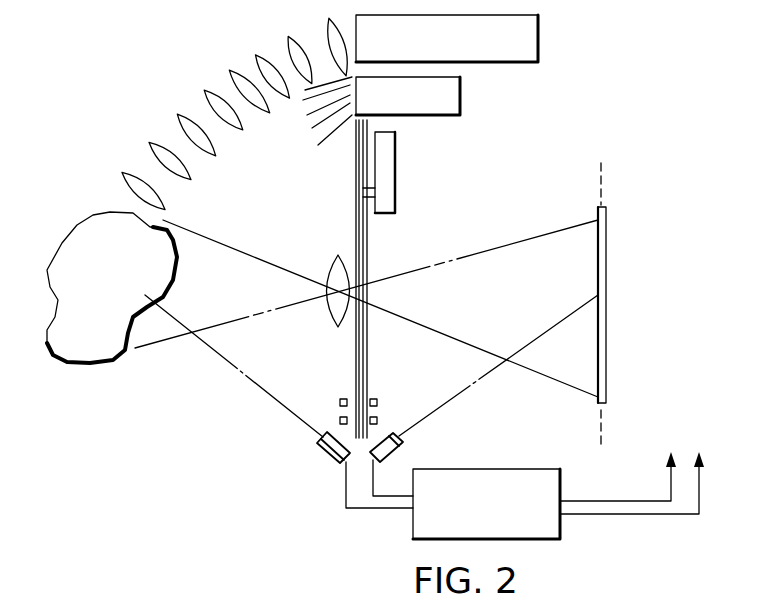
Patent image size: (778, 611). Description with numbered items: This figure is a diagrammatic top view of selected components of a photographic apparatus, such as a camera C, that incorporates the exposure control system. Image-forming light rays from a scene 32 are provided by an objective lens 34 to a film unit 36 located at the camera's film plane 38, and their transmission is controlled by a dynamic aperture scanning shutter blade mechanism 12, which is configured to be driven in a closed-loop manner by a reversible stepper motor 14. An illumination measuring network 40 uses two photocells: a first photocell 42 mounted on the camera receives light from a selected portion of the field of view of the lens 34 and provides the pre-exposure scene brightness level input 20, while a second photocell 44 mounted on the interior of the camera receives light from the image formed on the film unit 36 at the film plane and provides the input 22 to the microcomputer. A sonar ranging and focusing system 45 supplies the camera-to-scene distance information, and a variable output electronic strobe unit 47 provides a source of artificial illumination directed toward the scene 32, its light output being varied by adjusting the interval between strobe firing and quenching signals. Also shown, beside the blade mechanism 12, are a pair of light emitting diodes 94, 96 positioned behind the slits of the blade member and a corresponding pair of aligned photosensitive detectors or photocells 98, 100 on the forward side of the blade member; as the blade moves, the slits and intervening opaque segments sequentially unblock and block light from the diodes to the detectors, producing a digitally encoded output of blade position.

The camera C is at (602, 98).
The dynamic aperture scanning shutter blade mechanism 12 is at (378, 255).
The reversible stepper motor 14 is at (389, 146).
The pre-exposure scene brightness level input 20 is at (637, 472).
The input 22 is at (621, 466).
The scene 32 is at (116, 226).
The objective lens 34 is at (332, 270).
The film unit 36 is at (607, 260).
The film plane 38 is at (605, 178).
The illumination measuring network 40 is at (524, 469).
The first photocell 42 is at (325, 454).
The second photocell 44 is at (385, 455).
The sonar ranging and focusing system 45 is at (538, 42).
The variable output electronic strobe unit 47 is at (460, 92).
The light emitting diode 94 is at (377, 399).
The light emitting diode 96 is at (378, 420).
The photosensitive detector 98 is at (343, 397).
The photosensitive detector 100 is at (339, 419).